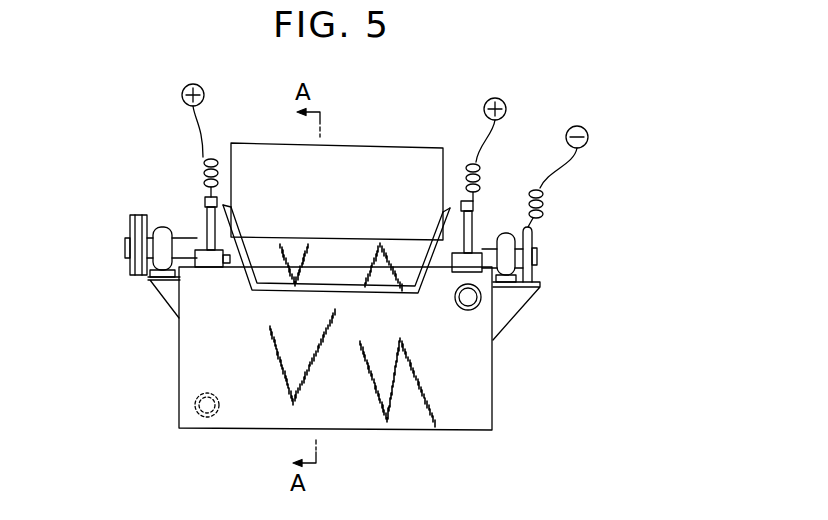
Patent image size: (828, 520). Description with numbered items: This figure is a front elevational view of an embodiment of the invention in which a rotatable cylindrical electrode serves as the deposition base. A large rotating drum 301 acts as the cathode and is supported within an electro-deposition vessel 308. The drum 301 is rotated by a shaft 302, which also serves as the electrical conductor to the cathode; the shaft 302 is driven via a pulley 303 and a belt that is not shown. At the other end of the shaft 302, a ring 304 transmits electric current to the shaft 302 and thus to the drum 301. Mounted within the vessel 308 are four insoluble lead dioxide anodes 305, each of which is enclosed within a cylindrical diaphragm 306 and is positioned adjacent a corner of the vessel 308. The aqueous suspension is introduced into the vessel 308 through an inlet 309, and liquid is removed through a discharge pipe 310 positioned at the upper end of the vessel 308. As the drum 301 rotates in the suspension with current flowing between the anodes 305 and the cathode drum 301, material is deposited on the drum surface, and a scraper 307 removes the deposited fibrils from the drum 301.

The rotating drum 301 is at (345, 160).
The shaft 302 is at (537, 260).
The pulley 303 is at (130, 267).
The ring 304 is at (532, 233).
The insoluble lead dioxide anode 305 is at (208, 220).
The cylindrical diaphragm 306 is at (197, 252).
The scraper 307 is at (247, 277).
The electro-deposition vessel 308 is at (178, 360).
The inlet 309 is at (196, 405).
The discharge pipe 310 is at (472, 310).